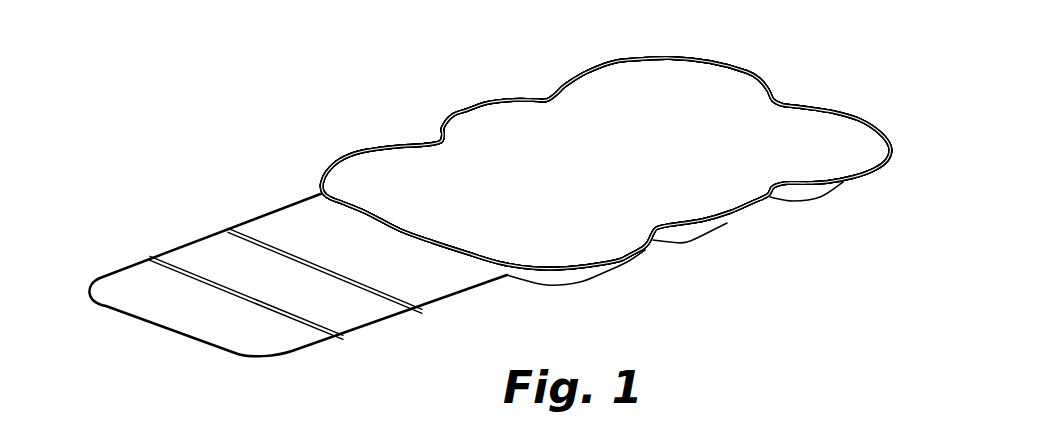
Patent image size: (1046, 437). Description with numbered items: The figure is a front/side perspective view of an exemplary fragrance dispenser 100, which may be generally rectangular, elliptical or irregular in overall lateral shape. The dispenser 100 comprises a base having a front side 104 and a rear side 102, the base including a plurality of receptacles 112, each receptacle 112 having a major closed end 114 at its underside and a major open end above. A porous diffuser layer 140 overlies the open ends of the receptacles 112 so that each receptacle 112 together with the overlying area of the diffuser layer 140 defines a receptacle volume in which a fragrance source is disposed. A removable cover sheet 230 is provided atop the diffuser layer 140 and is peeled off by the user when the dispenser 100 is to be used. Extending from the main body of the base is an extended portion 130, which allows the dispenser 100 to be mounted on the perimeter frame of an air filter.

The fragrance dispenser 100 is at (780, 39).
The rear side 102 is at (655, 276).
The front side 104 is at (409, 117).
The receptacle 112 is at (805, 192).
The major closed end 114 is at (678, 243).
The extended portion 130 is at (202, 253).
The porous diffuser layer 140 is at (522, 142).
The removable cover sheet 230 is at (617, 77).